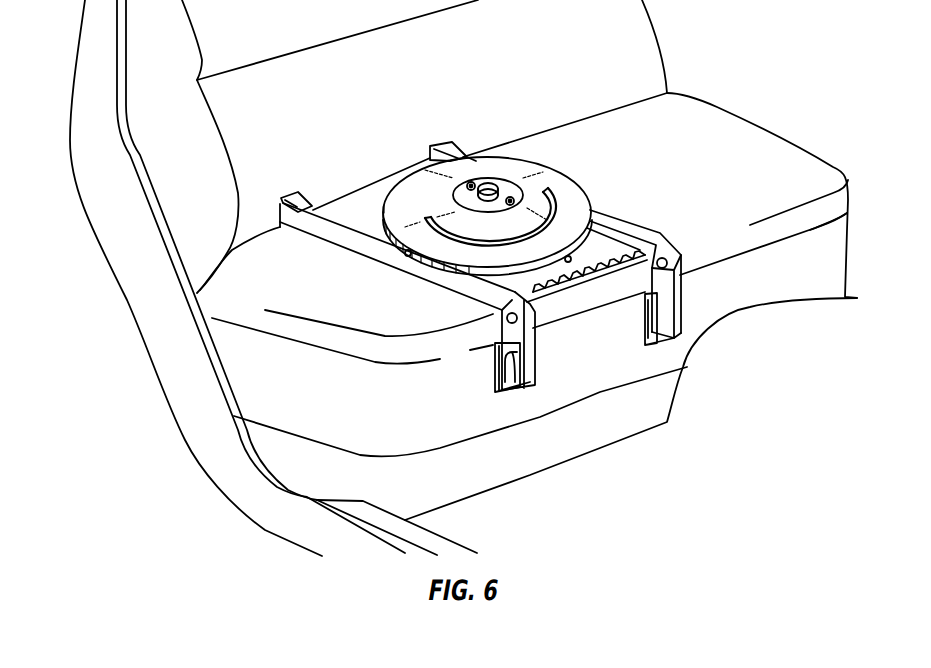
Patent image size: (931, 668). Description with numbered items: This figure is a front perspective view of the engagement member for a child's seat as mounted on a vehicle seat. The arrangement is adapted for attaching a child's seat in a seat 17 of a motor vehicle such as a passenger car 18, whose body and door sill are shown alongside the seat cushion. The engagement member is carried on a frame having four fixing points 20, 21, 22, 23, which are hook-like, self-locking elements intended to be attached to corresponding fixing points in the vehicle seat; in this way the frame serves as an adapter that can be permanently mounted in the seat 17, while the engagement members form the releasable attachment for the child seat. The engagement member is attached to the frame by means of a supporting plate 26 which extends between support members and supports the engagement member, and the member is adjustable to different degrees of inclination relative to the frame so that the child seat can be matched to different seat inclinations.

The seat 17 is at (345, 303).
The passenger car 18 is at (204, 376).
The fixing point 20 is at (497, 390).
The fixing point 21 is at (642, 342).
The fixing point 22 is at (303, 196).
The fixing point 23 is at (452, 140).
The supporting plate 26 is at (605, 244).